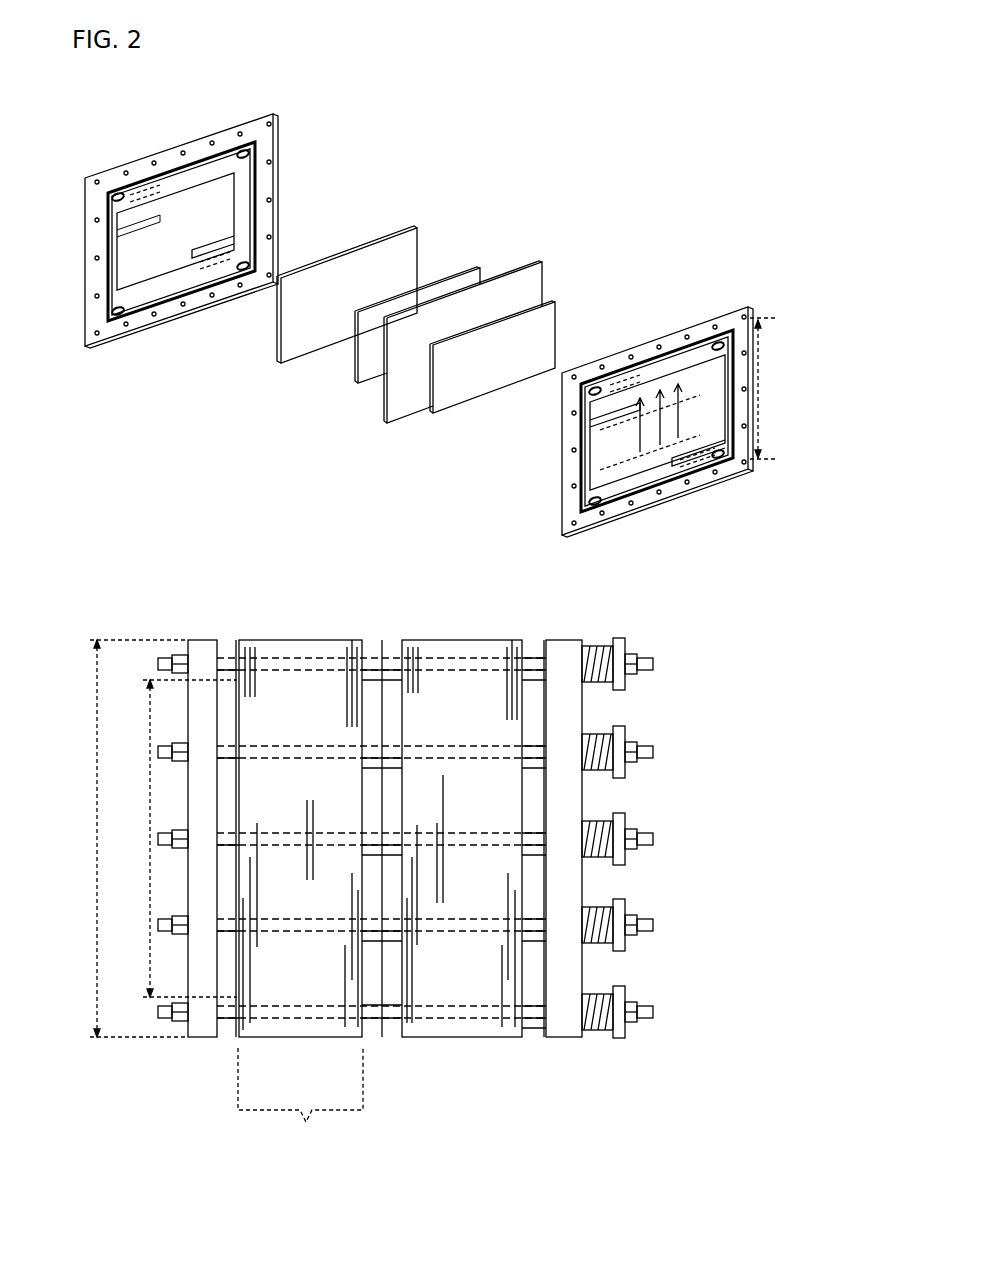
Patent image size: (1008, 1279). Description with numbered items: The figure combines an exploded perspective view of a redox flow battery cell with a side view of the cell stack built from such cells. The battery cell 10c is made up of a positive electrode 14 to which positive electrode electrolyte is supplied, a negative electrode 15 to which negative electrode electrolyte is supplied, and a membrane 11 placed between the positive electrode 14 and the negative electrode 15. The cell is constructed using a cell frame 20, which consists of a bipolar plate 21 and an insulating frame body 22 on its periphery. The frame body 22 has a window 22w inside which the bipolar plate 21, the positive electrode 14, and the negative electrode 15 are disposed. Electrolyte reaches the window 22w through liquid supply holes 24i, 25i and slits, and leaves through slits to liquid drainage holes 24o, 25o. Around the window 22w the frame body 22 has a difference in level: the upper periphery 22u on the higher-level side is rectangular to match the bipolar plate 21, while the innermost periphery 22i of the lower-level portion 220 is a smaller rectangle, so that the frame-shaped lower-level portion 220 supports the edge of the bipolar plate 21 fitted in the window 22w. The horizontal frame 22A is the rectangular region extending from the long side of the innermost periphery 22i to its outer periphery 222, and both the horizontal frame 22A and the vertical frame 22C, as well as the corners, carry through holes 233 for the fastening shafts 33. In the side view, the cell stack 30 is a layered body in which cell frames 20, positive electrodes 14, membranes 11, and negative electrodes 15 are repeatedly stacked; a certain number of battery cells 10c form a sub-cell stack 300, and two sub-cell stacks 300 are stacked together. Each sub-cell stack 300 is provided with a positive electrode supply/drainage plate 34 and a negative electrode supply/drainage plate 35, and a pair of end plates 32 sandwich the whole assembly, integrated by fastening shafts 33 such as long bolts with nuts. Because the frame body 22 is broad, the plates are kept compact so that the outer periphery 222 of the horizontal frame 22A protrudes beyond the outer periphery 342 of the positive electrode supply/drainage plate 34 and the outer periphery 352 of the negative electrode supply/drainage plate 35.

The battery cell 10c is at (510, 240).
The membrane 11 is at (524, 285).
The positive electrode 14 is at (560, 310).
The negative electrode 15 is at (440, 283).
The cell frame 20 is at (435, 617).
The bipolar plate 21 is at (380, 237).
The frame body 22 is at (283, 135).
The horizontal frame 22A is at (176, 330).
The vertical frame 22C is at (100, 275).
The innermost periphery 22i is at (172, 208).
The upper periphery 22u is at (118, 308).
The window 22w is at (238, 228).
The lower-level portion 220 is at (252, 196).
The outer periphery 222 is at (143, 155).
The through hole 233 is at (212, 142).
The liquid drainage hole 24o is at (117, 192).
The liquid supply hole 24i is at (243, 272).
The liquid drainage hole 25o is at (243, 148).
The liquid supply hole 25i is at (120, 318).
The cell stack 30 is at (168, 618).
The sub-cell stack 300 is at (528, 722).
The end plate 32 is at (200, 640).
The fastening shaft 33 is at (382, 645).
The positive electrode supply/drainage plate 34 is at (535, 965).
The negative electrode supply/drainage plate 35 is at (238, 660).
The outer periphery 342 is at (345, 640).
The outer periphery 352 is at (232, 645).